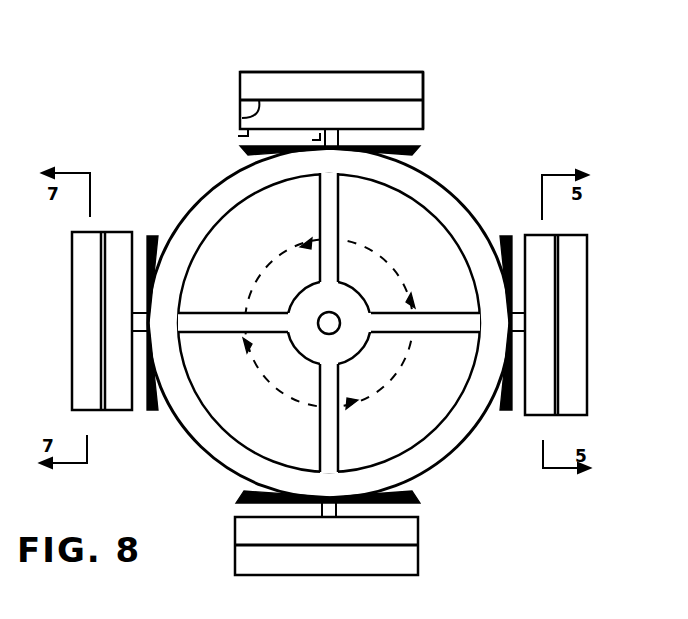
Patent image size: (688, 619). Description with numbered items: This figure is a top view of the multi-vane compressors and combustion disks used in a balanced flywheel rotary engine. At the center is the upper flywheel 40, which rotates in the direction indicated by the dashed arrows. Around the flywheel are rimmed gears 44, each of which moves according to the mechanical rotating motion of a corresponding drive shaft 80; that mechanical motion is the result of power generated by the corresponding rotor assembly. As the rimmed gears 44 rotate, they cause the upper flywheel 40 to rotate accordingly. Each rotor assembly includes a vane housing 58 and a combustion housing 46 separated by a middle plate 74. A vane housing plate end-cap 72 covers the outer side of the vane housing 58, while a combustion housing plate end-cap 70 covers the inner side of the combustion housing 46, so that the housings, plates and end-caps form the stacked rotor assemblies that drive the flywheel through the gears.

The upper flywheel 40 is at (223, 200).
The rimmed gear 44 is at (415, 167).
The combustion housing 46 is at (425, 115).
The vane housing 58 is at (242, 85).
The combustion housing plate end-cap 70 is at (238, 136).
The vane housing plate end-cap 72 is at (413, 70).
The middle plate 74 is at (247, 117).
The drive shaft 80 is at (325, 137).